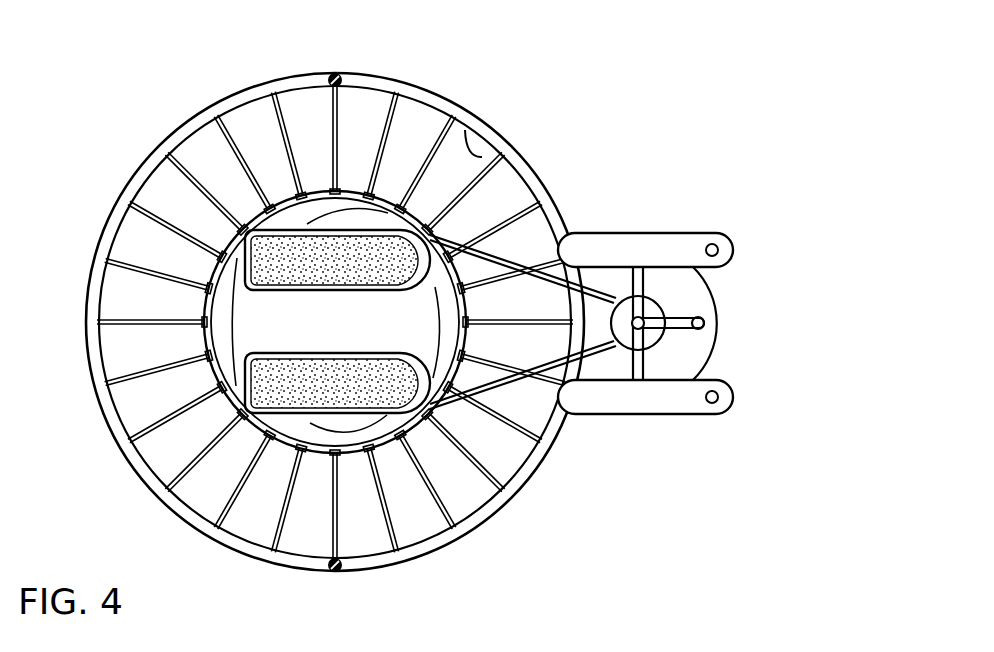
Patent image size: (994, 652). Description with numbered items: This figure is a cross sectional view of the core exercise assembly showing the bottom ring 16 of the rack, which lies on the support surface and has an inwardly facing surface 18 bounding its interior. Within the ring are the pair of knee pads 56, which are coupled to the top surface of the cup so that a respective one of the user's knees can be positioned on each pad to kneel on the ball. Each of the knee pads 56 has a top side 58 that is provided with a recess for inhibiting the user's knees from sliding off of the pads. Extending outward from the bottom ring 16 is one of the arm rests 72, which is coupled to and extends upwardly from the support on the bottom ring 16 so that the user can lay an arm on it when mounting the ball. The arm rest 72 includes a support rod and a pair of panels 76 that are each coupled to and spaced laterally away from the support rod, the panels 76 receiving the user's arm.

The bottom ring 16 is at (538, 172).
The inwardly facing surface 18 is at (470, 185).
The knee pads 56 is at (273, 233).
The top side 58 is at (355, 248).
The arm rests 72 is at (737, 247).
The panels 76 is at (650, 243).